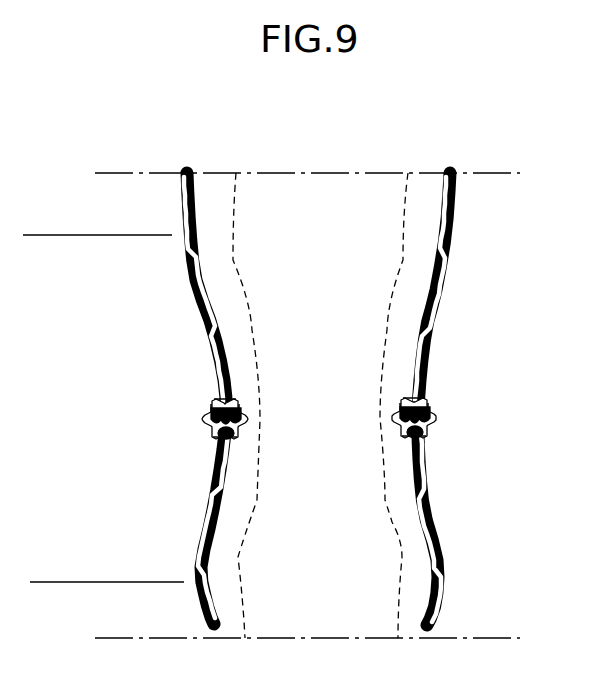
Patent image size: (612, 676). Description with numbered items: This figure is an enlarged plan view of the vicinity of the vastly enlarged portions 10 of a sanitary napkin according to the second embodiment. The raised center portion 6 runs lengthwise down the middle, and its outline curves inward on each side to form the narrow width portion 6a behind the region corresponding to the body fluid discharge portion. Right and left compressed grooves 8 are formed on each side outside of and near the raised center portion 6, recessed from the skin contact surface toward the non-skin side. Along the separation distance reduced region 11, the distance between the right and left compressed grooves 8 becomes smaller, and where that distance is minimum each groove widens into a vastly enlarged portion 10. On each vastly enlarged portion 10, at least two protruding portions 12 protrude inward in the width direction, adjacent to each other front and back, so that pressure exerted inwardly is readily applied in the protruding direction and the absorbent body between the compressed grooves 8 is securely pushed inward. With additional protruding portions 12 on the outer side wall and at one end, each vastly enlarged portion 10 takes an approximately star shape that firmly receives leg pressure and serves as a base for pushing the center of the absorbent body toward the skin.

The raised center portion 6 is at (410, 200).
The narrow width portion 6a is at (350, 505).
The compressed grooves 8 is at (183, 203).
The vastly enlarged portions 10 is at (203, 418).
The separation distance reduced regions 11 is at (44, 582).
The protruding portions 12 is at (215, 402).